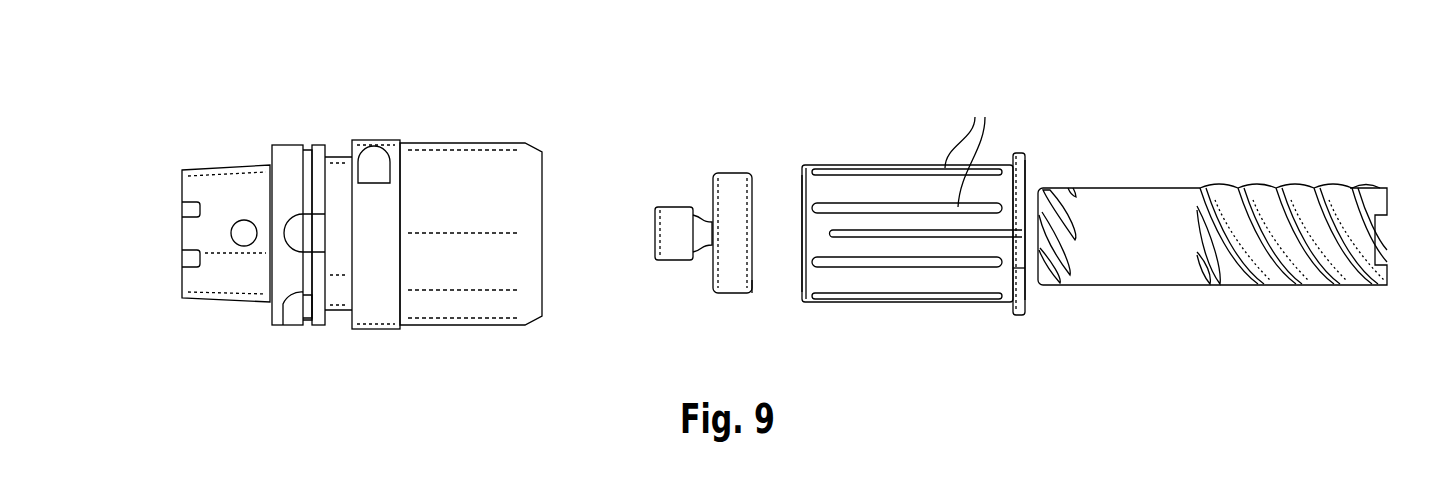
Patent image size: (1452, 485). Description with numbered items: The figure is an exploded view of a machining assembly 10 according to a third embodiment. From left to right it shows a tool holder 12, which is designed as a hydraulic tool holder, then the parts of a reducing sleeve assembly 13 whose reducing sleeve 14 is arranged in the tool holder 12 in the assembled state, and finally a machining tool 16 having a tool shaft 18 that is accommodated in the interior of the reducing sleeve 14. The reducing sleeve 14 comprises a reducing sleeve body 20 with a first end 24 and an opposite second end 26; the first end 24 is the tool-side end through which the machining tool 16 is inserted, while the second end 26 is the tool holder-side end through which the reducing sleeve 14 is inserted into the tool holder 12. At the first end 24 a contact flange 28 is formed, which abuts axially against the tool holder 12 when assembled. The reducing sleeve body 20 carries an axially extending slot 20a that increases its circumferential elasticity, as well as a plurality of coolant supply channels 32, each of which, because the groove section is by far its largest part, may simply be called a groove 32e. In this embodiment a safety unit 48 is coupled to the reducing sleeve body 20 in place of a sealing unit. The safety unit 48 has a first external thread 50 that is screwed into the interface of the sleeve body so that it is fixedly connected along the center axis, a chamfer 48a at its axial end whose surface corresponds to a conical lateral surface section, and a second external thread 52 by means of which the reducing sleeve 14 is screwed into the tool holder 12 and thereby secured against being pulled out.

The machining assembly 10 is at (1212, 165).
The tool holder 12 is at (432, 133).
The reducing sleeve assembly 13 is at (907, 183).
The reducing sleeve 14 is at (910, 155).
The machining tool 16 is at (1197, 162).
The tool shaft 18 is at (1123, 182).
The reducing sleeve body 20 is at (932, 225).
The slot 20a is at (1015, 270).
The first end 24 is at (1037, 160).
The second end 26 is at (793, 178).
The contact flange 28 is at (1022, 152).
The coolant supply channel 32 is at (917, 236).
The groove 32e is at (898, 350).
The safety unit 48 is at (725, 219).
The chamfer 48a is at (750, 292).
The first external thread 50 is at (733, 172).
The second external thread 52 is at (668, 200).